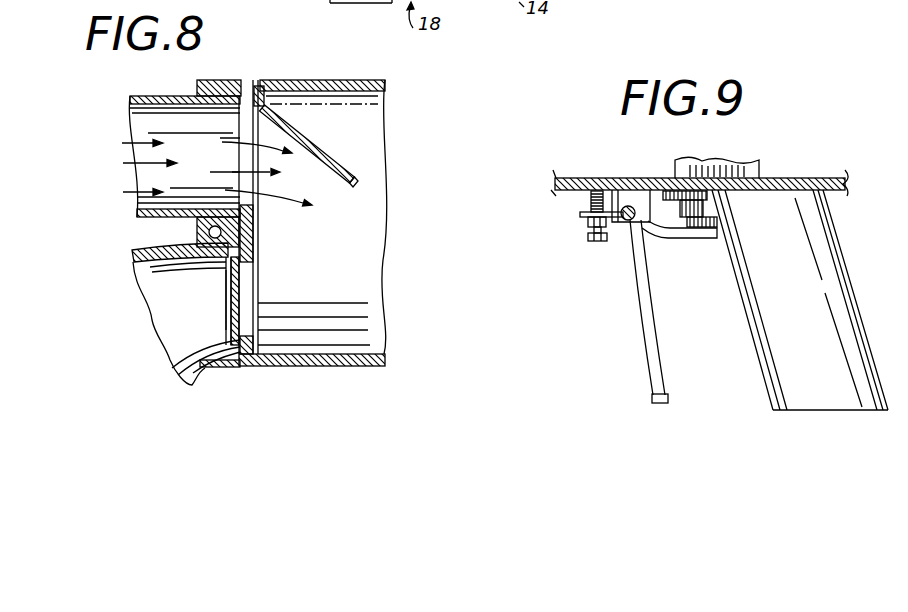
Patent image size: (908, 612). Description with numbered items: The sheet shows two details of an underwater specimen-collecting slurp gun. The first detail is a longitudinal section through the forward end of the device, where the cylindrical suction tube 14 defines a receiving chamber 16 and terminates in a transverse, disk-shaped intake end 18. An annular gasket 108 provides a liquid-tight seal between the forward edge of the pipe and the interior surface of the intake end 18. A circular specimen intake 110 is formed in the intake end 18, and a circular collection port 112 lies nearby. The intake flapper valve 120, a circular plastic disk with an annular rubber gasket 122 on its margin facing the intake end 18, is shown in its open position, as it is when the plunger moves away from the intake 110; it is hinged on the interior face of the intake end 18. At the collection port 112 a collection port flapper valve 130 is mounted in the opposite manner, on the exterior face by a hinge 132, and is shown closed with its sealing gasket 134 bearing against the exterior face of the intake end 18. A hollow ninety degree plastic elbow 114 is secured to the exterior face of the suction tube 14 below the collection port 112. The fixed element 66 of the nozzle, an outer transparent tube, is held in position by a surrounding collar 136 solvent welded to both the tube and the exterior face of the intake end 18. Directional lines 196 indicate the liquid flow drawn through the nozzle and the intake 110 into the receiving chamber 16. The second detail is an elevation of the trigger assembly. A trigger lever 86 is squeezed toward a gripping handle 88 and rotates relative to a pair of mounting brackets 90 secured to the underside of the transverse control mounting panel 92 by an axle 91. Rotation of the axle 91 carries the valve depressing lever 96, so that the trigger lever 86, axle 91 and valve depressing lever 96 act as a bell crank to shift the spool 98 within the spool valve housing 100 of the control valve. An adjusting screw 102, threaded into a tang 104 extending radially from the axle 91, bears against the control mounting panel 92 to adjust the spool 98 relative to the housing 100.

In FIG. 8, the suction tube 14 is at (316, 367).
In FIG. 8, the receiving chamber 16 is at (332, 248).
In FIG. 8, the intake end 18 is at (254, 78).
In FIG. 8, the fixed element 66 is at (170, 88).
In FIG. 8, the annular gasket 108 is at (262, 83).
In FIG. 8, the specimen intake 110 is at (250, 161).
In FIG. 8, the collection port 112 is at (245, 285).
In FIG. 8, the hollow ninety degree plastic elbow 114 is at (141, 251).
In FIG. 8, the intake flapper valve 120 is at (338, 146).
In FIG. 8, the annular rubber gasket 122 is at (354, 184).
In FIG. 8, the collection port flapper valve 130 is at (218, 293).
In FIG. 8, the hinge 132 is at (194, 247).
In FIG. 8, the sealing gasket 134 is at (246, 343).
In FIG. 8, the collar 136 is at (218, 80).
In FIG. 8, the directional lines 196 is at (123, 166).
In FIG. 9, the trigger lever 86 is at (647, 300).
In FIG. 9, the gripping handle 88 is at (830, 277).
In FIG. 9, the mounting brackets 90 is at (636, 200).
In FIG. 9, the axle 91 is at (623, 238).
In FIG. 9, the control mounting panel 92 is at (838, 192).
In FIG. 9, the valve depressing lever 96 is at (690, 240).
In FIG. 9, the spool 98 is at (702, 202).
In FIG. 9, the spool valve housing 100 is at (756, 164).
In FIG. 9, the adjusting screw 102 is at (587, 230).
In FIG. 9, the tang 104 is at (614, 206).